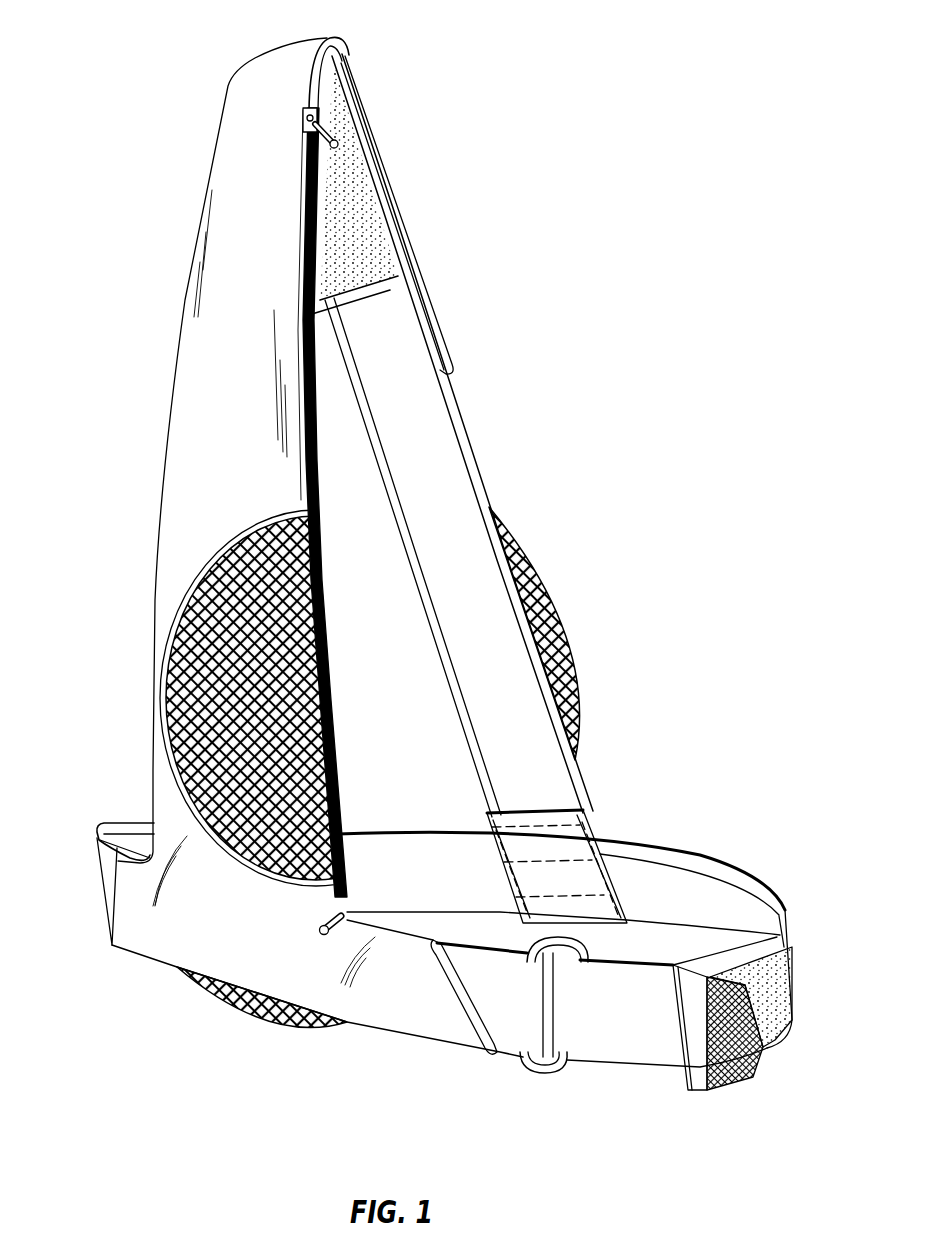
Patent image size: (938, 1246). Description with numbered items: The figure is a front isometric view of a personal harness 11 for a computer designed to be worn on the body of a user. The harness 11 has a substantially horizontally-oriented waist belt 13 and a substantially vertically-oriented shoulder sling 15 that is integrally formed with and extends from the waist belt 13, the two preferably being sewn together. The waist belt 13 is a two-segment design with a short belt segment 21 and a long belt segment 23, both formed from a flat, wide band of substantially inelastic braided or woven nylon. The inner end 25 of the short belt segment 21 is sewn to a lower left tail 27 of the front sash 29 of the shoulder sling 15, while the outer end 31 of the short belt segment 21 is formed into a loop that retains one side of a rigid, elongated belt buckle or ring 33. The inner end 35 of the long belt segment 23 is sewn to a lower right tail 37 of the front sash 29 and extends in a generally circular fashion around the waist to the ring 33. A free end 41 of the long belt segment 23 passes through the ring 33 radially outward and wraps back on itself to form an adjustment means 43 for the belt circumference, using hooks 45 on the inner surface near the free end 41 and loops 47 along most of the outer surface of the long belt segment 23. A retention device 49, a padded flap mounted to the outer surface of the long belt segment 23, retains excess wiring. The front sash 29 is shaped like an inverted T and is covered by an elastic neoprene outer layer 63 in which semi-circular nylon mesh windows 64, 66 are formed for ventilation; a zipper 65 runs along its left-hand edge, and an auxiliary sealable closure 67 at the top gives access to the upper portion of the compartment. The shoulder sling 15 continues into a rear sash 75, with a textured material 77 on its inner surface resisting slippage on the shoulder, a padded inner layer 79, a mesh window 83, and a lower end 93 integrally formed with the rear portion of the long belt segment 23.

The personal harness 11 is at (455, 569).
The waist belt 13 is at (611, 939).
The shoulder sling 15 is at (459, 494).
The short belt segment 21 is at (512, 1033).
The long belt segment 23 is at (453, 847).
The inner end of short belt segment 25 is at (500, 950).
The lower left tail 27 is at (443, 1023).
The front sash 29 is at (275, 534).
The outer end of short belt segment 31 is at (547, 1067).
The belt buckle or ring 33 is at (540, 1067).
The inner end of long belt segment 35 is at (125, 855).
The lower right tail 37 is at (133, 933).
The free end of long belt segment 41 is at (697, 1093).
The adjustment means 43 is at (778, 1037).
The hooks 45 is at (743, 1073).
The loops 47 is at (793, 982).
The retention device 49 is at (103, 817).
The outer layer 63 is at (185, 380).
The semi-circular window 64 is at (170, 677).
The zipper 65 is at (323, 603).
The semi-circular window 66 is at (230, 1000).
The auxiliary sealable closure 67 is at (280, 67).
The rear sash 75 is at (487, 463).
The textured material 77 is at (363, 233).
The inner layer 79 is at (462, 682).
The semi-circular window 83 is at (553, 623).
The lower end of rear sash 93 is at (577, 880).